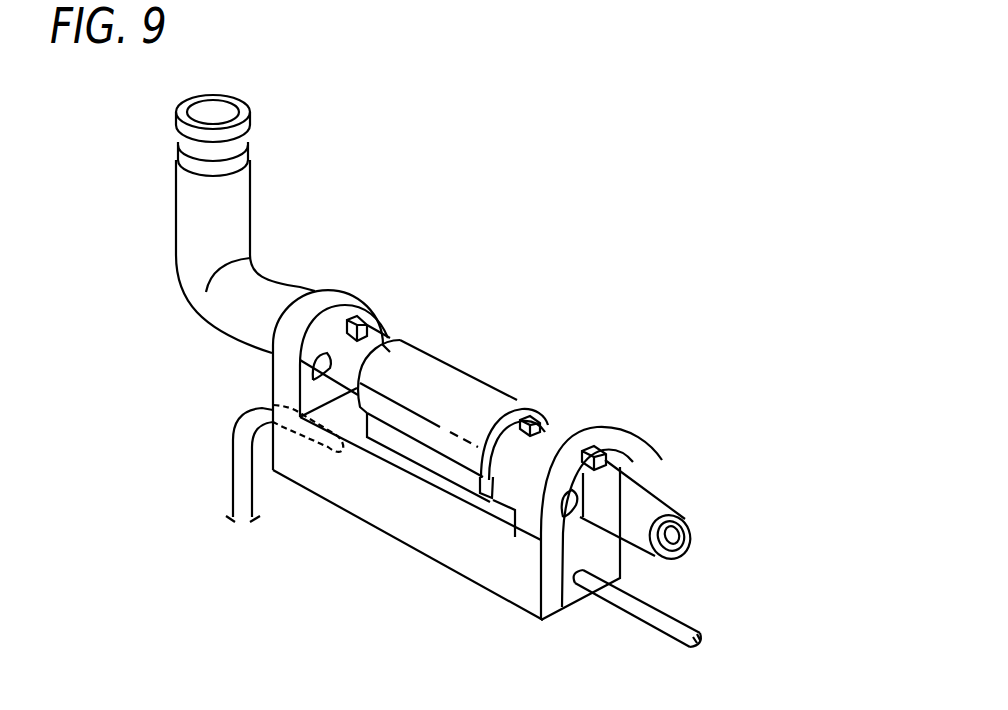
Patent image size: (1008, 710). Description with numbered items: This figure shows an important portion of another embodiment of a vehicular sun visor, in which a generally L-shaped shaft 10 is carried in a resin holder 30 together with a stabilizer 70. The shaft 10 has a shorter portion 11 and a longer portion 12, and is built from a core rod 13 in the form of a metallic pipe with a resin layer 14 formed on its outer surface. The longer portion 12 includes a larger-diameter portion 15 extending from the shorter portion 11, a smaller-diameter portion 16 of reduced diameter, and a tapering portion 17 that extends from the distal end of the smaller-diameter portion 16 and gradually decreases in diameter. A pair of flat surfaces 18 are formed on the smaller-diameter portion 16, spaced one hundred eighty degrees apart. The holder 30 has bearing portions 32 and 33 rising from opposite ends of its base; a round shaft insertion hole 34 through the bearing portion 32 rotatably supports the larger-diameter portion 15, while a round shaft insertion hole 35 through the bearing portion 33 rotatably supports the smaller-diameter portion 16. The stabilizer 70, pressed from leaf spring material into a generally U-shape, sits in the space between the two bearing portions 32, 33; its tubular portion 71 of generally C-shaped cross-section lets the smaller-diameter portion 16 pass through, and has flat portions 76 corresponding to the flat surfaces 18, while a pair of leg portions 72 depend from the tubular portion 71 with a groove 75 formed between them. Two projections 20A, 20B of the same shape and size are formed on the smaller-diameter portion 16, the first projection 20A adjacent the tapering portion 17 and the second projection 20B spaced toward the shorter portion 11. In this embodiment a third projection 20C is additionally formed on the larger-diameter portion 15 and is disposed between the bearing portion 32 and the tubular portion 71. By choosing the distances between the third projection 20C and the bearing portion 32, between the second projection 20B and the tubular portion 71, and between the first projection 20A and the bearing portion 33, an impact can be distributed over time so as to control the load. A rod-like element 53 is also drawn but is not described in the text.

The shaft 10 is at (209, 230).
The shorter portion 11 is at (176, 230).
The longer portion 12 is at (287, 281).
The core rod 13 is at (690, 533).
The resin layer 14 is at (387, 335).
The larger-diameter portion 15 is at (233, 320).
The smaller-diameter portion 16 is at (548, 403).
The tapering portion 17 is at (679, 512).
The flat surfaces 18 is at (513, 490).
The first projection 20A is at (607, 449).
The second projection 20B is at (533, 414).
The third projection 20C is at (352, 318).
The holder 30 is at (322, 506).
The bearing portion 32 is at (322, 338).
The bearing portion 33 is at (603, 425).
The shaft insertion hole 34 is at (323, 360).
The shaft insertion hole 35 is at (623, 532).
The rod 53 is at (657, 632).
The stabilizer 70 is at (427, 476).
The tubular portion 71 is at (423, 355).
The leg portions 72 is at (447, 470).
The groove 75 is at (497, 478).
The flat portions 76 is at (410, 422).